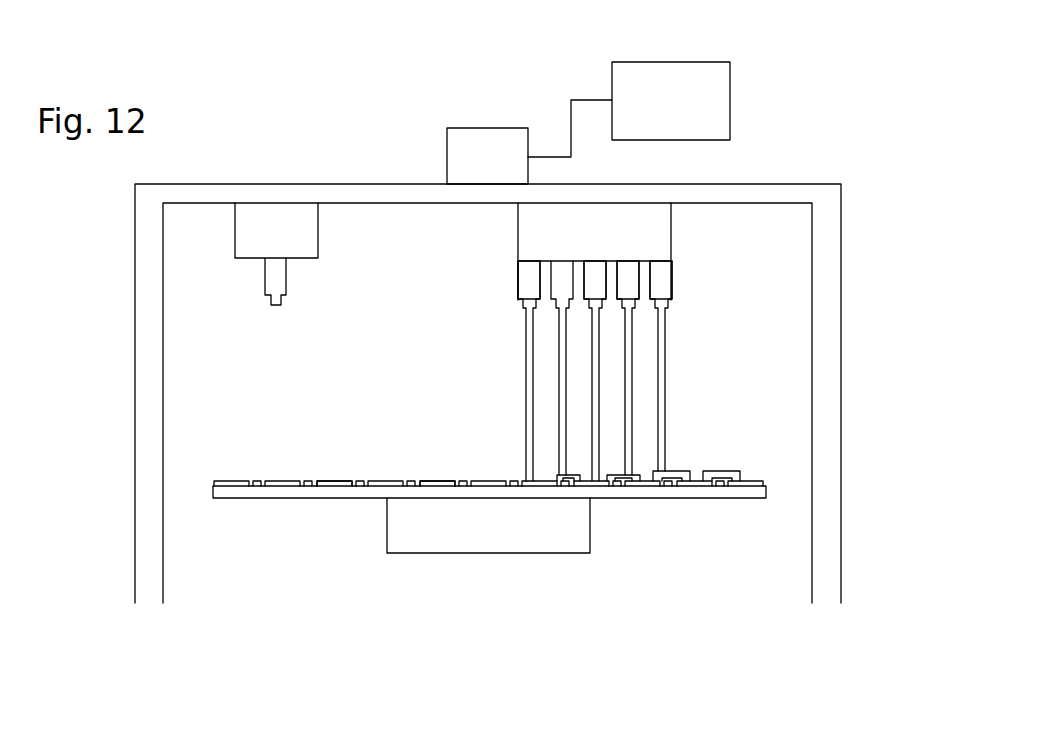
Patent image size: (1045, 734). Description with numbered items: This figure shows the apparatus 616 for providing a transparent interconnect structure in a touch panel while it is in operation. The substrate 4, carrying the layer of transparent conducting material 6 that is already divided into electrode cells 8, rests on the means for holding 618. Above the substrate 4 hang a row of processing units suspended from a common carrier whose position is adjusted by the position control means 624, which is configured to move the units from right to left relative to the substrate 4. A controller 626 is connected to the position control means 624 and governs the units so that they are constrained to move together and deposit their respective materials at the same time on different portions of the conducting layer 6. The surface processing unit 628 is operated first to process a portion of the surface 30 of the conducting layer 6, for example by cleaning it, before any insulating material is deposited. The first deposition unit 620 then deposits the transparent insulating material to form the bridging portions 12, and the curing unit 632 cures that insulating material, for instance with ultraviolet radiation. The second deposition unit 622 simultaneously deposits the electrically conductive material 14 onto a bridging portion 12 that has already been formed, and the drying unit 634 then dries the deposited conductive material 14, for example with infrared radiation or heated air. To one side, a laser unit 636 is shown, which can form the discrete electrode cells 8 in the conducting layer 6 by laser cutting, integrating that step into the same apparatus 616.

The apparatus 616 is at (848, 123).
The means for holding 618 is at (518, 545).
The first deposition unit 620 is at (556, 272).
The second deposition unit 622 is at (631, 278).
The position control means 624 is at (458, 155).
The controller 626 is at (665, 82).
The surface processing unit 628 is at (525, 280).
The curing unit 632 is at (595, 278).
The drying unit 634 is at (662, 293).
The laser unit 636 is at (275, 284).
The substrate 4 is at (638, 493).
The layer of transparent conducting material 6 is at (333, 483).
The electrode cells 8 is at (438, 482).
The surface 30 is at (290, 480).
The bridging portions 12 is at (727, 480).
The electrically conductive material 14 is at (719, 473).